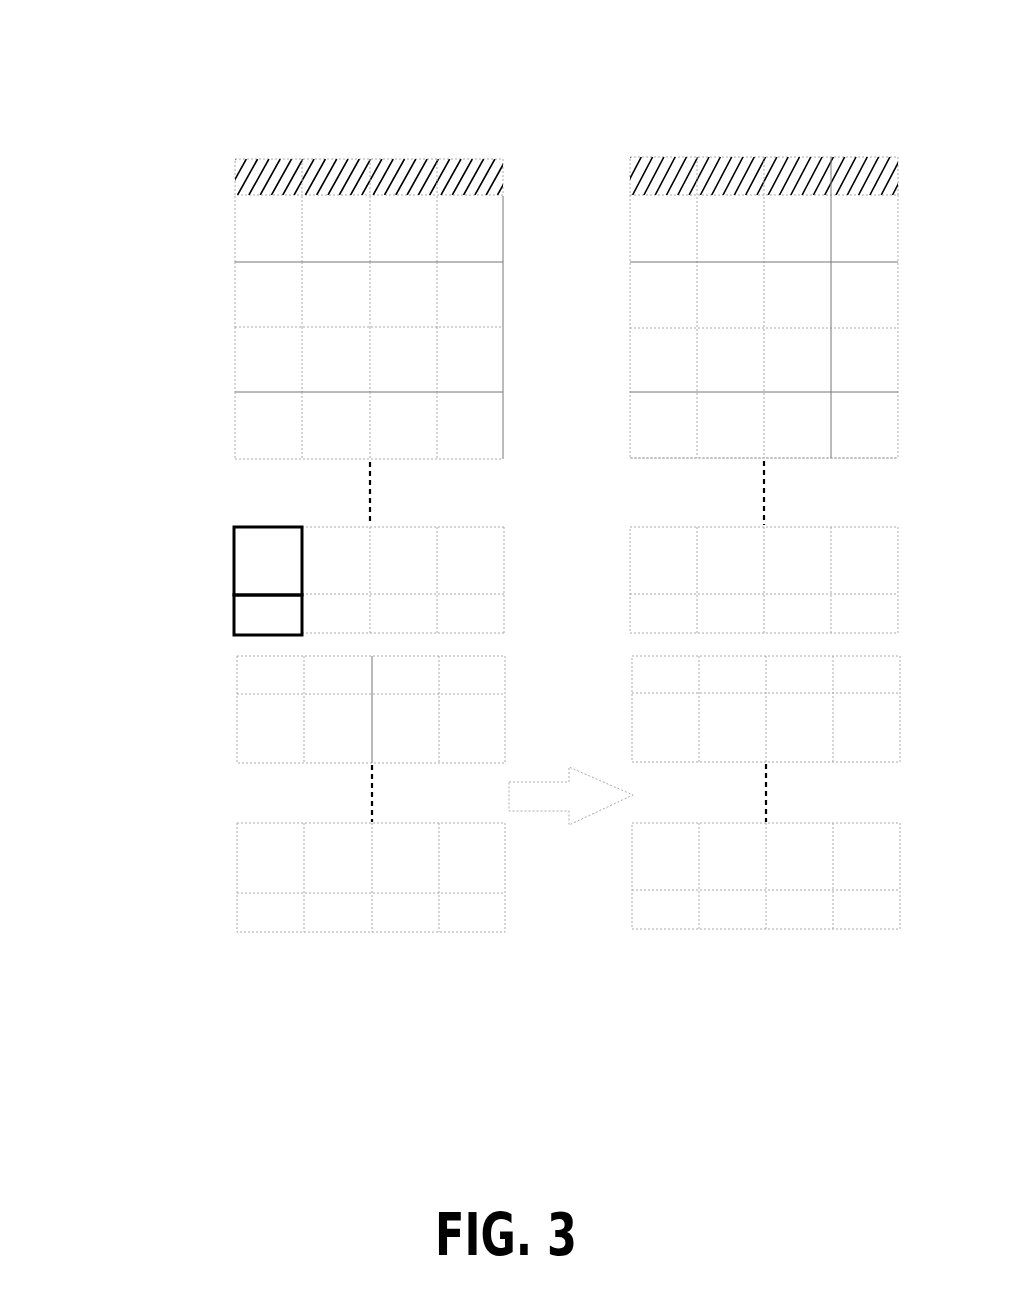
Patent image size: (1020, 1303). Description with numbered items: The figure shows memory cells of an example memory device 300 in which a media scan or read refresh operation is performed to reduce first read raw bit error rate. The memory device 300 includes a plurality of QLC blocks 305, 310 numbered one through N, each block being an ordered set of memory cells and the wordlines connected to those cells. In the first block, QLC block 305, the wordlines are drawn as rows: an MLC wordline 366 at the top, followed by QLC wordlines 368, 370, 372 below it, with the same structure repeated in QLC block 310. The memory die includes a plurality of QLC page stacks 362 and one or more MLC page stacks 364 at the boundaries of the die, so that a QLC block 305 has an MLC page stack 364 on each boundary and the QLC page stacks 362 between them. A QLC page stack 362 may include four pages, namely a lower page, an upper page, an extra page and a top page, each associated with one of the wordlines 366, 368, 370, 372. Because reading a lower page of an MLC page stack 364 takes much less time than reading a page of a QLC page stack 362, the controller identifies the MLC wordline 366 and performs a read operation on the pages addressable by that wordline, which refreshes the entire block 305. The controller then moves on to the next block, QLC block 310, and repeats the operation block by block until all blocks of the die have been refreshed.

The memory device 300 is at (582, 85).
The QLC block 305 is at (508, 637).
The QLC block 310 is at (761, 511).
The MLC wordline 366 is at (347, 177).
The wordline 368 is at (346, 229).
The wordline 370 is at (346, 294).
The wordline 372 is at (346, 359).
The QLC page stack 362 is at (234, 562).
The MLC page stack 364 is at (162, 167).